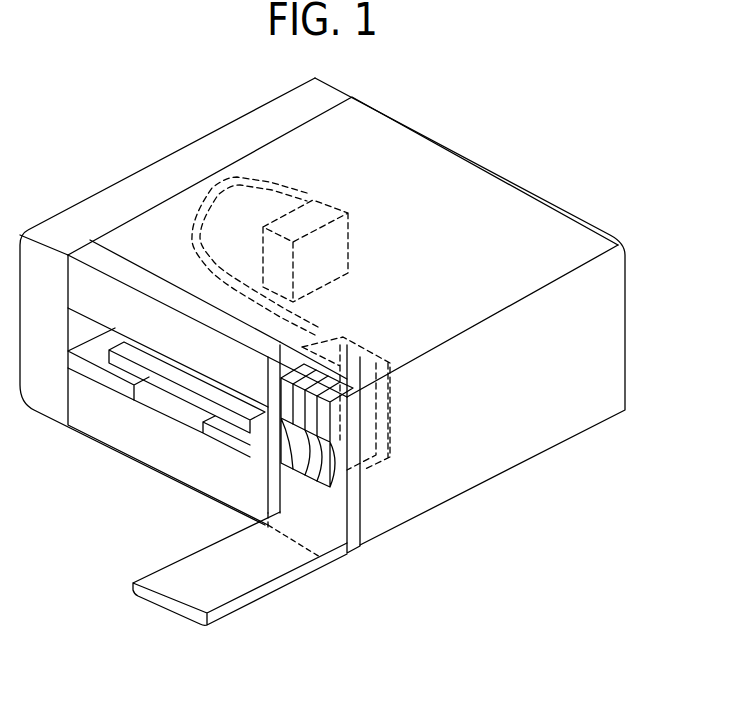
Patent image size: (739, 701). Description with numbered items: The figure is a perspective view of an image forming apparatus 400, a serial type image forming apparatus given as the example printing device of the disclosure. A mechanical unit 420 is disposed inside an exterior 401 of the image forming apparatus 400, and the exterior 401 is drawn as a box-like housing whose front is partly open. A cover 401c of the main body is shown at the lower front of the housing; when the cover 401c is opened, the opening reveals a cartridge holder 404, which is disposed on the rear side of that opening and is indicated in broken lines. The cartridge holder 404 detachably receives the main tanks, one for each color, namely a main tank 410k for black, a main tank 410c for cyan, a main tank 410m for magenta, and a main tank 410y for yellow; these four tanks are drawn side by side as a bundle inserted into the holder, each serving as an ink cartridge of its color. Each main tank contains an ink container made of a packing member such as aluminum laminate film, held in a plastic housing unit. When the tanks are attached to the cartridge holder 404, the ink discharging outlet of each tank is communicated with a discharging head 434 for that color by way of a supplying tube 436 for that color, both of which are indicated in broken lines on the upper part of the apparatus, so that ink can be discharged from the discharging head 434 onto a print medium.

The image forming apparatus 400 is at (553, 100).
The exterior 401 is at (129, 167).
The cover 401c is at (272, 590).
The cartridge holder 404 is at (392, 418).
The main tank for black 410k is at (287, 442).
The main tank for cyan 410c is at (300, 453).
The main tank for magenta 410m is at (307, 462).
The main tank for yellow 410y is at (318, 470).
The mechanical unit 420 is at (409, 205).
The discharging head 434 is at (322, 198).
The supplying tube 436 is at (232, 180).